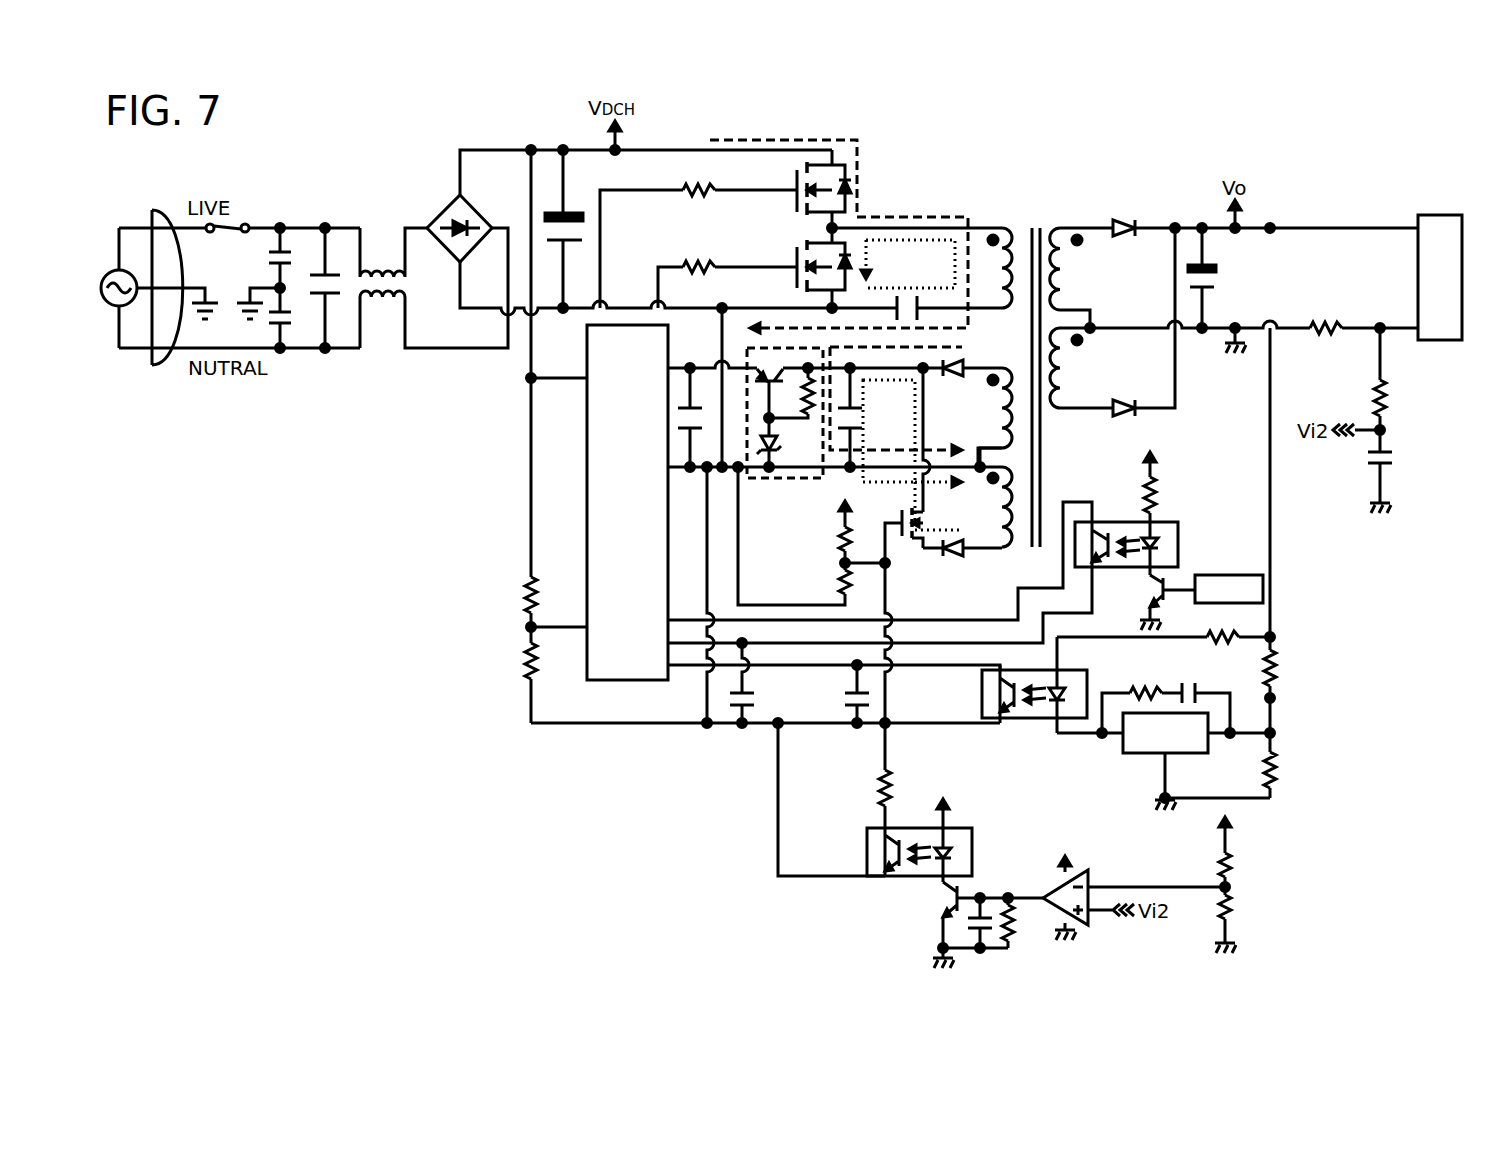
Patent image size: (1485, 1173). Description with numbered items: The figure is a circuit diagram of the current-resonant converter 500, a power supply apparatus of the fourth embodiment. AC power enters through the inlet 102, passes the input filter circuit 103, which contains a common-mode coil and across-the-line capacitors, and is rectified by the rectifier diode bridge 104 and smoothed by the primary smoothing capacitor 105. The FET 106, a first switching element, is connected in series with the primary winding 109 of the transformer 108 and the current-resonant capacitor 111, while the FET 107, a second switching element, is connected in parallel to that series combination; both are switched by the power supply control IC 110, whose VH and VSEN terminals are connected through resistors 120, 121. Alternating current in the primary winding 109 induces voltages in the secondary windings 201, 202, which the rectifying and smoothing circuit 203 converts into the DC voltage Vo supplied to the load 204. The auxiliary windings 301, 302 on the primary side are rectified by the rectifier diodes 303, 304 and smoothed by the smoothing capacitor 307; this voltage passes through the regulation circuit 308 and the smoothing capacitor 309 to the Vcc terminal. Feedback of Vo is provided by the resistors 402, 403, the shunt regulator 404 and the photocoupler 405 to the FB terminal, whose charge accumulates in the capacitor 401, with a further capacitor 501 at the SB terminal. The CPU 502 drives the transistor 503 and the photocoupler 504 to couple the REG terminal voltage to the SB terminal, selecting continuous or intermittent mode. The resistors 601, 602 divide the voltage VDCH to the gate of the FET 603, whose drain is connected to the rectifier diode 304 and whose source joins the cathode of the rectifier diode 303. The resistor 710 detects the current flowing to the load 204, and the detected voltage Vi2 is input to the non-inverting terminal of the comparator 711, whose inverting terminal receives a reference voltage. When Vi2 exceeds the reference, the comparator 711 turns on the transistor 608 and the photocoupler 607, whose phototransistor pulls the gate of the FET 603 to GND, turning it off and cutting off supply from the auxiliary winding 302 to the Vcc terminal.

The inlet 102 is at (156, 218).
The input filter circuit 103 is at (337, 213).
The rectifier diode bridge 104 is at (435, 205).
The primary smoothing capacitor 105 is at (578, 228).
The FET 106 is at (788, 201).
The FET 107 is at (788, 254).
The transformer 108 is at (1040, 220).
The primary winding 109 is at (997, 218).
The power supply control IC 110 is at (578, 667).
The current-resonant capacitor 111 is at (905, 293).
The resistor 120 is at (523, 590).
The resistor 121 is at (523, 662).
The secondary winding 201 is at (1077, 297).
The secondary winding 202 is at (1077, 387).
The rectifying and smoothing circuit 203 is at (1160, 218).
The load 204 is at (1440, 215).
The auxiliary winding 301 is at (997, 413).
The auxiliary winding 302 is at (997, 522).
The rectifier diode 303 is at (973, 360).
The rectifier diode 304 is at (970, 552).
The smoothing capacitor 307 is at (857, 420).
The regulation circuit 308 is at (765, 485).
The smoothing capacitor 309 is at (683, 478).
The capacitor 401 is at (852, 722).
The resistor 402 is at (1287, 655).
The resistor 403 is at (1287, 772).
The shunt regulator 404 is at (1135, 760).
The photocoupler 405 is at (1092, 685).
The current-resonant converter 500 is at (927, 143).
The capacitor 501 is at (755, 697).
The CPU 502 is at (1240, 573).
The transistor 503 is at (1177, 580).
The photocoupler 504 is at (1177, 515).
The resistor 601 is at (835, 547).
The resistor 602 is at (835, 583).
The FET 603 is at (918, 548).
The photocoupler 607 is at (865, 852).
The transistor 608 is at (935, 905).
The resistor 710 is at (1334, 313).
The comparator 711 is at (1087, 870).